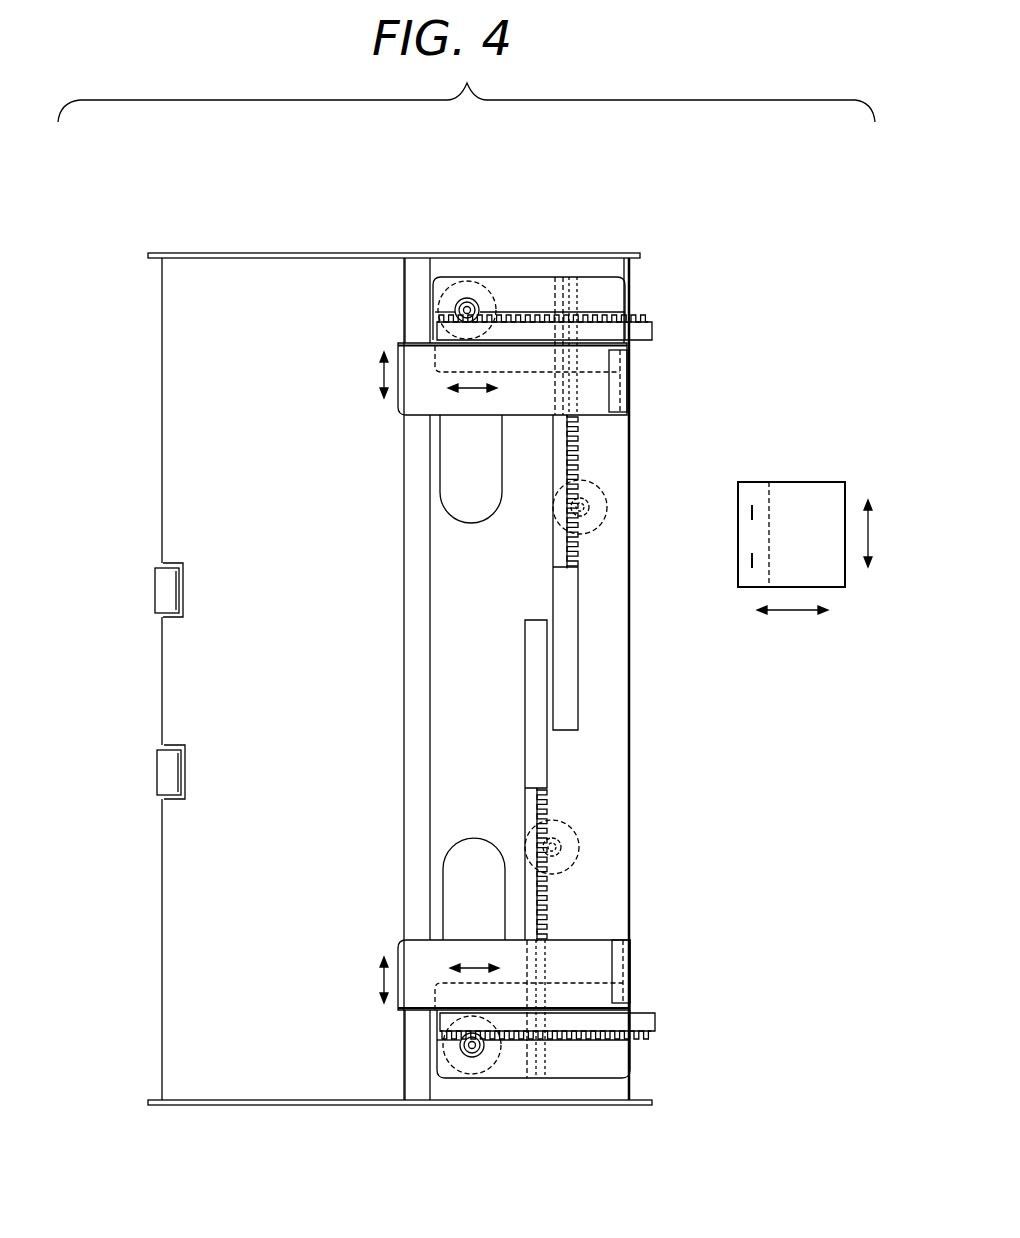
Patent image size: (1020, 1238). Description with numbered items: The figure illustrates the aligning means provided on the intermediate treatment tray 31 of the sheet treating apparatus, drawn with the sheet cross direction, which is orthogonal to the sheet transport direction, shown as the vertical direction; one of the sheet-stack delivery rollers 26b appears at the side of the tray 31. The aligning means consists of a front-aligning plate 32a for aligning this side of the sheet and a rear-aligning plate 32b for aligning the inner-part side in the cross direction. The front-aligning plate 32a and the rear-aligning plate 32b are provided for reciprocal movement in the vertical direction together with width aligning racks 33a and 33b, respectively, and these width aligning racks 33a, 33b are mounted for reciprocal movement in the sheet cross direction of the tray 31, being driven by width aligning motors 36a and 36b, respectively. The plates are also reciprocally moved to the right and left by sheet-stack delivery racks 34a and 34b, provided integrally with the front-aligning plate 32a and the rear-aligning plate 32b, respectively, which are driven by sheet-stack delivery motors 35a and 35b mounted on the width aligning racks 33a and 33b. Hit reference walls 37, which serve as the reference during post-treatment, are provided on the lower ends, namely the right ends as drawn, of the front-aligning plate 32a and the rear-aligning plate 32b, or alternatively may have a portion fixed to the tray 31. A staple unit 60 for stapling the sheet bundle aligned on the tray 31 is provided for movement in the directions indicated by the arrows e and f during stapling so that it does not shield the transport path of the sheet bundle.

The sheet-stack delivery roller 26b is at (156, 590).
The intermediate treatment tray 31 is at (605, 622).
The front-aligning plate 32a is at (418, 1013).
The rear-aligning plate 32b is at (415, 338).
The width aligning rack 33a is at (537, 1078).
The width aligning rack 33b is at (563, 277).
The sheet-stack delivery rack 34a is at (645, 1022).
The sheet-stack delivery rack 34b is at (651, 318).
The sheet-stack delivery motor 35a is at (470, 1060).
The sheet-stack delivery motor 35b is at (467, 298).
The width aligning motor 36a is at (575, 860).
The width aligning motor 36b is at (595, 495).
The hit reference wall 37 is at (627, 383).
The staple unit 60 is at (822, 492).